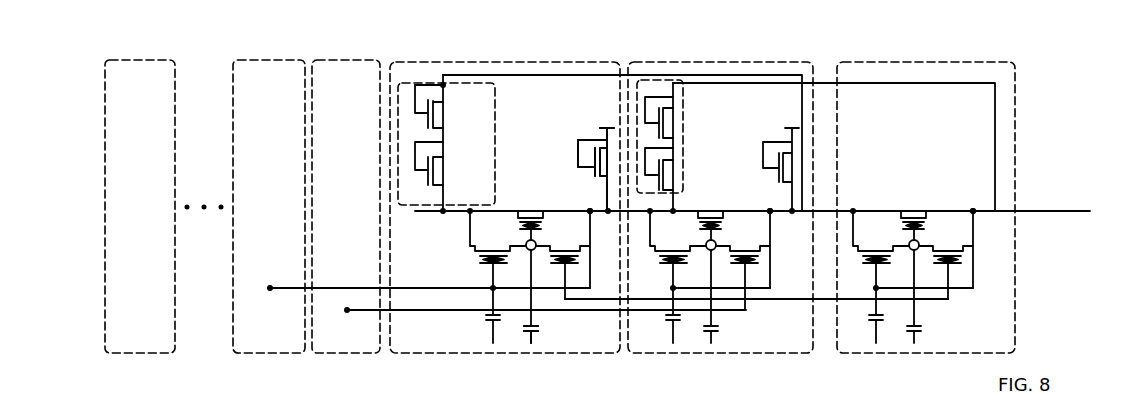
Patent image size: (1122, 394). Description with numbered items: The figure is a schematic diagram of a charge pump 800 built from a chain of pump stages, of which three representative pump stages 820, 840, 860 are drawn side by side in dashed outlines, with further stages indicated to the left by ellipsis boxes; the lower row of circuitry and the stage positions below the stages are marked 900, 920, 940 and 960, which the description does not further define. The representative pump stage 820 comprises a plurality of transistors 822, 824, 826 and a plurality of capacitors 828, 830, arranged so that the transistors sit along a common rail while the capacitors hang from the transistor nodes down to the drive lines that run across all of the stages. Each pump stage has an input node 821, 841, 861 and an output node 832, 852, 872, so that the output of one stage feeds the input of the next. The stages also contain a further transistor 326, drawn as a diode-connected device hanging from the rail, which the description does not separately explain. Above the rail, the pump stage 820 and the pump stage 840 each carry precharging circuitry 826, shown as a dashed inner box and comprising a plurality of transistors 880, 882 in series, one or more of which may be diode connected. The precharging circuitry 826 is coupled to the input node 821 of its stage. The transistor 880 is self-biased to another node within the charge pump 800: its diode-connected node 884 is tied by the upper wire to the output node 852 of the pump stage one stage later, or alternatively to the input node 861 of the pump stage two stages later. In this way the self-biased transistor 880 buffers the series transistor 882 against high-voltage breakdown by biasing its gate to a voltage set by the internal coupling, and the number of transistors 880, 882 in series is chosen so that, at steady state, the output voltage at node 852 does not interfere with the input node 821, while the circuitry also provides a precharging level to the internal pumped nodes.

The charge pump 800 is at (102, 53).
The row circuit arrangement 900 is at (316, 390).
The pump stage 820 is at (443, 60).
The pump stage 840 is at (682, 60).
The pump stage 860 is at (892, 60).
The precharging circuitry 826 is at (503, 110).
The diode-connected node 884 is at (447, 93).
The transistor 880 is at (438, 121).
The transistor 882 is at (438, 171).
The input node 821 is at (472, 200).
The output node 832 is at (589, 201).
The transistor 326 is at (568, 156).
The transistor 824 is at (529, 211).
The transistor 822 is at (492, 251).
The capacitor 828 is at (487, 317).
The capacitor 830 is at (540, 332).
The input node 841 is at (654, 202).
The output node 852 is at (774, 202).
The input node 861 is at (857, 202).
The output node 872 is at (975, 202).
The column circuit 920 is at (452, 384).
The column circuit 940 is at (635, 384).
The column circuit 960 is at (812, 384).